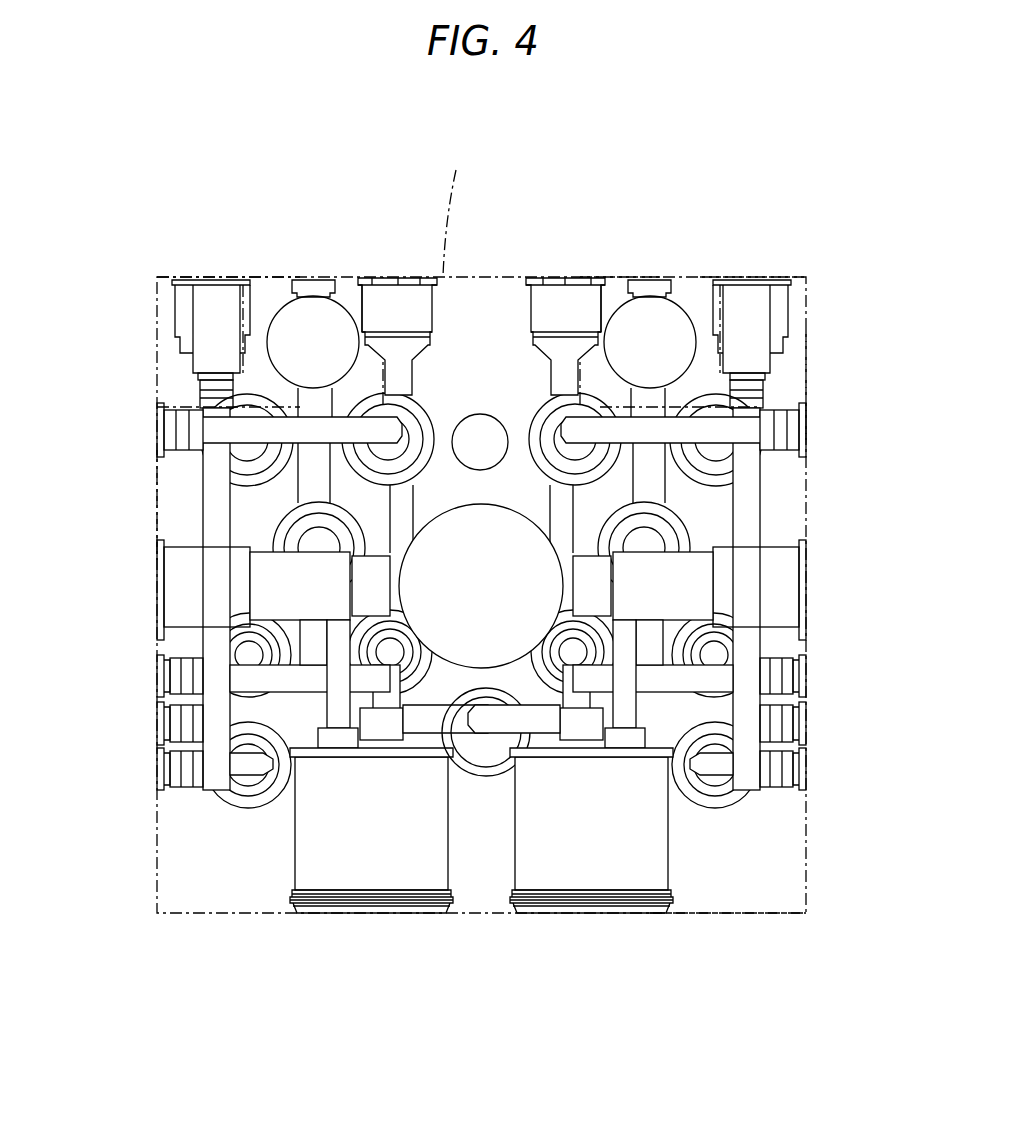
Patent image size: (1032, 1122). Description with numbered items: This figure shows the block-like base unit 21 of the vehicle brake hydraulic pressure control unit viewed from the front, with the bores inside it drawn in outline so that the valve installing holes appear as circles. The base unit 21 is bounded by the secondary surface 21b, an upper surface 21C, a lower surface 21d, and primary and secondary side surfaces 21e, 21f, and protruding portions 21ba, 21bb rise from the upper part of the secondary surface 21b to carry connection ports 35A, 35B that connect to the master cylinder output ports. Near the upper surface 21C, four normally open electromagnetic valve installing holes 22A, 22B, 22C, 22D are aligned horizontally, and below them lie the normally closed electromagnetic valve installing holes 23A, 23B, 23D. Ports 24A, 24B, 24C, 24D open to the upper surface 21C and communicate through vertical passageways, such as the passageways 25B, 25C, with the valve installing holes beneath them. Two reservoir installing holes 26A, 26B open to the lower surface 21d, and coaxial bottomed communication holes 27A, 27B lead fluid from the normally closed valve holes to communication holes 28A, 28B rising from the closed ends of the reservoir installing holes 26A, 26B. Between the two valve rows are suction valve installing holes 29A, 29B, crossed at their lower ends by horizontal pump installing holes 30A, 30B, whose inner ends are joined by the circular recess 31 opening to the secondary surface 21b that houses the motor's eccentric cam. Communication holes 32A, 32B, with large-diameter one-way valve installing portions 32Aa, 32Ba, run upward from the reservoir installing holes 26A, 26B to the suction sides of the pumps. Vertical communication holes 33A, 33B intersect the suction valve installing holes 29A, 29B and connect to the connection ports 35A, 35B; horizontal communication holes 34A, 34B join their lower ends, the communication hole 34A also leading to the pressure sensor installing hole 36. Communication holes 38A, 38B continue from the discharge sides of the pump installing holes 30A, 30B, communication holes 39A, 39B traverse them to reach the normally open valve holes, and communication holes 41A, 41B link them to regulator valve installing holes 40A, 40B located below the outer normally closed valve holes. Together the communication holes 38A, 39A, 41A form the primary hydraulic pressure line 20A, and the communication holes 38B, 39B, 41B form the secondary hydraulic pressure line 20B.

The primary hydraulic pressure line 20A is at (205, 645).
The secondary hydraulic pressure line 20B is at (758, 645).
The base unit 21 is at (470, 277).
The secondary surface 21b is at (448, 207).
The protruding portion 21ba is at (232, 297).
The protruding portion 21bb is at (760, 300).
The upper surface 21C is at (612, 280).
The lower surface 21d is at (725, 915).
The primary side surface 21e is at (155, 510).
The secondary side surface 21f is at (806, 386).
The normally open electromagnetic valve installing hole 22A is at (200, 390).
The normally open electromagnetic valve installing hole 22B is at (413, 298).
The normally open electromagnetic valve installing hole 22C is at (566, 298).
The normally open electromagnetic valve installing hole 22D is at (745, 393).
The normally closed electromagnetic valve installing hole 23A is at (265, 700).
The normally closed electromagnetic valve installing hole 23B is at (348, 895).
The normally closed electromagnetic valve installing hole 23D is at (725, 715).
The port 24A is at (258, 298).
The port 24B is at (405, 278).
The port 24C is at (533, 300).
The port 24D is at (778, 300).
The passageway 25B is at (370, 279).
The passageway 25C is at (585, 298).
The reservoir installing hole 26A is at (398, 760).
The reservoir installing hole 26B is at (632, 760).
The bottomed communication hole 27A is at (257, 675).
The bottomed communication hole 27B is at (690, 690).
The communication hole 28A is at (412, 700).
The communication hole 28B is at (551, 705).
The suction valve installing hole 29A is at (318, 515).
The suction valve installing hole 29B is at (680, 530).
The pump installing hole 30A is at (173, 585).
The pump installing hole 30B is at (790, 585).
The recess 31 is at (540, 520).
The communication hole 32A is at (275, 615).
The one-way valve installing portion 32Aa is at (232, 790).
The communication hole 32B is at (700, 625).
The one-way valve installing portion 32Ba is at (700, 770).
The communication hole 33A is at (200, 445).
The communication hole 33B is at (717, 488).
The communication hole 34A is at (470, 727).
The communication hole 34B is at (560, 727).
The connection port 35A is at (318, 300).
The connection port 35B is at (650, 300).
The pressure sensor installing hole 36 is at (497, 865).
The communication hole 38A is at (225, 523).
The communication hole 38B is at (745, 545).
The communication hole 39A is at (348, 425).
The communication hole 39B is at (653, 423).
The regulator valve installing hole 40A is at (268, 905).
The regulator valve installing hole 40B is at (745, 780).
The communication hole 41A is at (225, 790).
The communication hole 41B is at (712, 790).